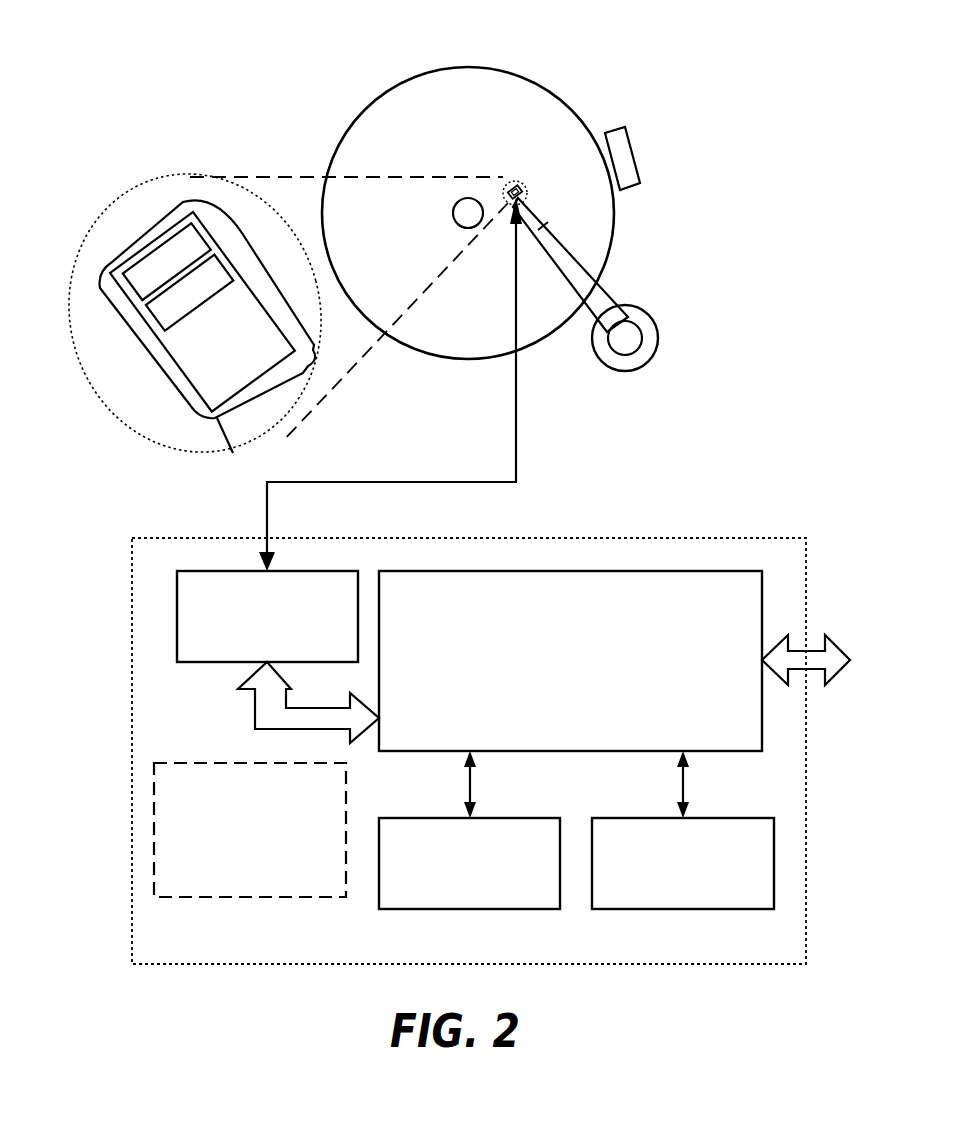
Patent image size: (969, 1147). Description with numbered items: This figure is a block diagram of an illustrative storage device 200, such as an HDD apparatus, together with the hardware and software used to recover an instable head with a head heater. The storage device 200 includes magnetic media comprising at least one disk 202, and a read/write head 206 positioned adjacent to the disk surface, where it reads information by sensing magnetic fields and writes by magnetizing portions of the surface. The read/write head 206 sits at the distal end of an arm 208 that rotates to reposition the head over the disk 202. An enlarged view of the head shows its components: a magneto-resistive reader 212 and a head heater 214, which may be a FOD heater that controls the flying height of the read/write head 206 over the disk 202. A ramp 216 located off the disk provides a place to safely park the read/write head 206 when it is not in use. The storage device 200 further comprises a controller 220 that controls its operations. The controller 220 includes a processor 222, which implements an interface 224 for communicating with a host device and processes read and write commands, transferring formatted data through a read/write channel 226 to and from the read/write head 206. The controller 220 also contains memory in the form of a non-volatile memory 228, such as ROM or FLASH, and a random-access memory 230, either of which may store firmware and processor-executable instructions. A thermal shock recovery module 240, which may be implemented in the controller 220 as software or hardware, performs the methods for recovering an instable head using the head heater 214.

The storage device 200 is at (72, 58).
The disk 202 is at (452, 144).
The read/write head 206 is at (521, 187).
The arm 208 is at (572, 266).
The magneto-resistive reader 212 is at (183, 293).
The head heater 214 is at (155, 268).
The ramp 216 is at (622, 163).
The controller 220 is at (324, 954).
The processor 222 is at (625, 672).
The interface 224 is at (832, 656).
The read/write channel 226 is at (285, 644).
The non-volatile memory 228 is at (487, 889).
The random-access memory 230 is at (667, 889).
The thermal shock recovery module 240 is at (266, 884).